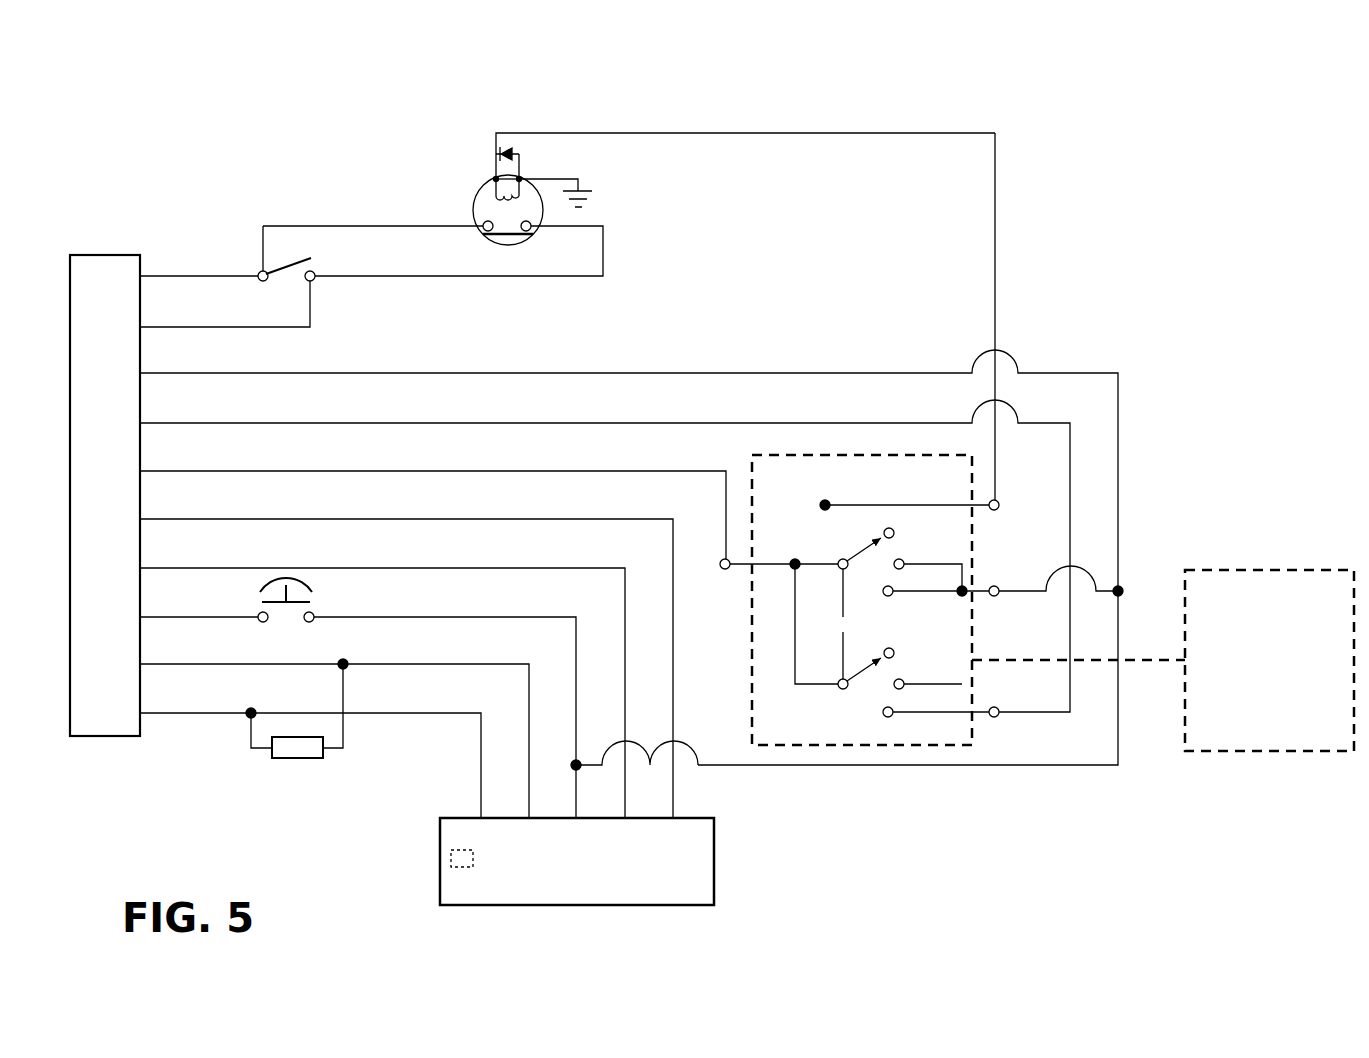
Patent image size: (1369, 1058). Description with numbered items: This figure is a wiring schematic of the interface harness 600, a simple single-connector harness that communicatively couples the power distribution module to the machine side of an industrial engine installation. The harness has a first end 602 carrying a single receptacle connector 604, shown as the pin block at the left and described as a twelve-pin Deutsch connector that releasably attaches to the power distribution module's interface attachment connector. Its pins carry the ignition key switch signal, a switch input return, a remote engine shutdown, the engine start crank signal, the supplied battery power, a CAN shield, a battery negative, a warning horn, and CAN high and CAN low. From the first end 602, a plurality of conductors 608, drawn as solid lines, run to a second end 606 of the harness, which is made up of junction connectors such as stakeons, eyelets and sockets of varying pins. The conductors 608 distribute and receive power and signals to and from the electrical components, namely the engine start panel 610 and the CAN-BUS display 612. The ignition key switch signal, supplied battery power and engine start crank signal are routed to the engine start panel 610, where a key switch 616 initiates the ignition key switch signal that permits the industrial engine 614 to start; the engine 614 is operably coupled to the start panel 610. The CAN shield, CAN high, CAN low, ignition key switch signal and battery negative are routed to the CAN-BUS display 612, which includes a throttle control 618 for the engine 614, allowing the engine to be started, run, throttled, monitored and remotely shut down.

The interface harness 600 is at (184, 103).
The first end 602 is at (107, 233).
The single receptacle connector 604 is at (134, 255).
The second end 606 is at (1219, 358).
The plurality of conductors 608 is at (868, 106).
The engine start panel 610 is at (864, 650).
The CAN-BUS display 612 is at (585, 869).
The industrial engine 614 is at (1240, 752).
The key switch 616 is at (818, 655).
The throttle control 618 is at (447, 870).